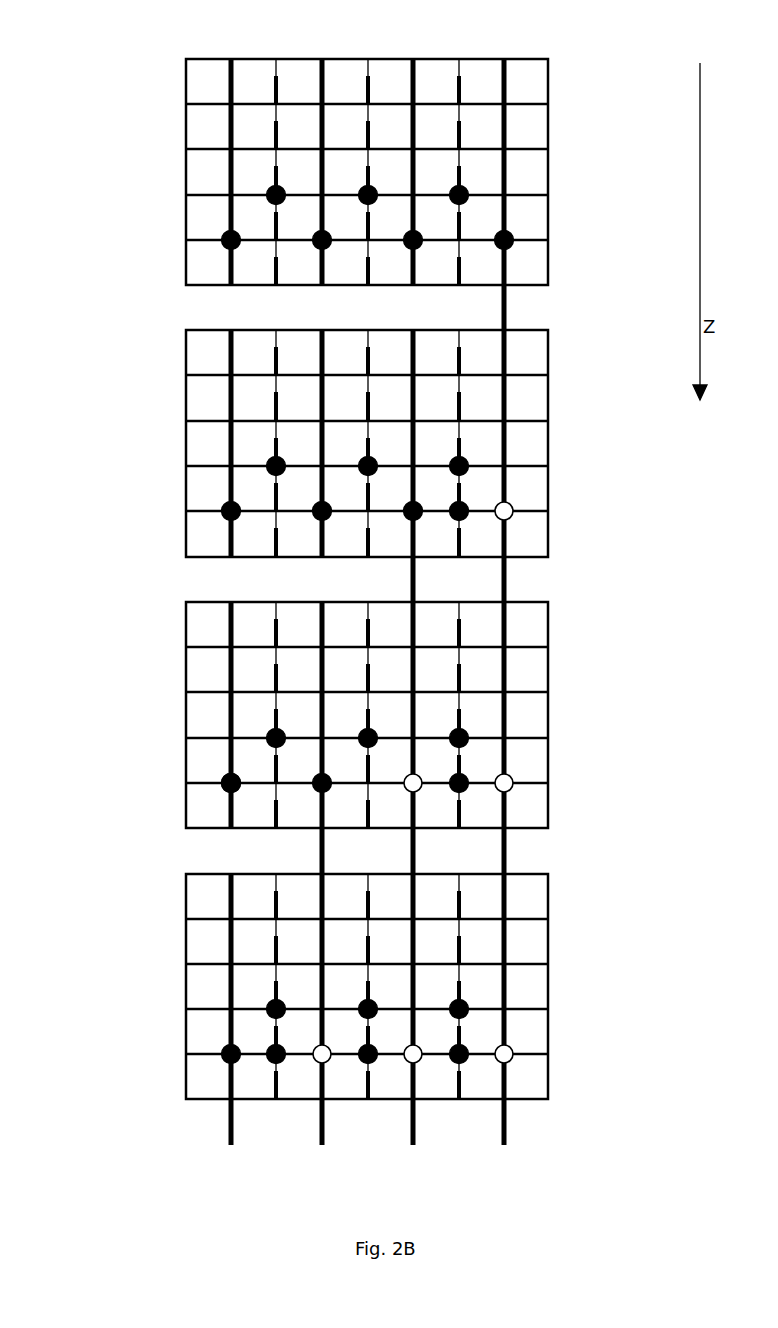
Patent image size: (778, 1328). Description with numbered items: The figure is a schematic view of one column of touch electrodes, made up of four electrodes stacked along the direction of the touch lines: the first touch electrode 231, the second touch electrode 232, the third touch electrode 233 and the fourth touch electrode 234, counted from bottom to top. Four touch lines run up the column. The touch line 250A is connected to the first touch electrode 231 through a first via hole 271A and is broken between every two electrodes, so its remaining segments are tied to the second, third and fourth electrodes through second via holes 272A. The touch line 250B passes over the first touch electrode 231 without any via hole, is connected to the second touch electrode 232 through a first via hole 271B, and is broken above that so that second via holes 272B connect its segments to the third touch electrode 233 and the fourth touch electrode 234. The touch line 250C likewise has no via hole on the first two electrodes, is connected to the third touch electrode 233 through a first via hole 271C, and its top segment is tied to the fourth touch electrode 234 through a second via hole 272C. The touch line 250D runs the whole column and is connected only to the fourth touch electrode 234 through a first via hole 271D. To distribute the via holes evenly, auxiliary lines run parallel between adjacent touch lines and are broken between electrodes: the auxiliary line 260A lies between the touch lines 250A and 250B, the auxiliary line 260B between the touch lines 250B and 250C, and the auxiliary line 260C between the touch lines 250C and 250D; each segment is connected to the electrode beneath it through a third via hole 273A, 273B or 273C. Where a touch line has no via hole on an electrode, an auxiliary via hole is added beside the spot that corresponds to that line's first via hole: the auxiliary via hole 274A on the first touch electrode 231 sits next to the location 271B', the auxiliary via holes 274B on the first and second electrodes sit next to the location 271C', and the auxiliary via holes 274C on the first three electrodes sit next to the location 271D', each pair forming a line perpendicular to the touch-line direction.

The first touch electrode 231 is at (548, 900).
The second touch electrode 232 is at (548, 660).
The third touch electrode 233 is at (548, 403).
The fourth touch electrode 234 is at (548, 63).
The touch line 250A is at (229, 75).
The touch line 250B is at (320, 165).
The touch line 250C is at (415, 353).
The touch line 250D is at (504, 156).
The auxiliary line 260A is at (274, 125).
The auxiliary line 260B is at (369, 58).
The auxiliary line 260C is at (459, 110).
The first via hole 271A is at (222, 1054).
The first via hole 271B is at (180, 815).
The location corresponding to first via hole 271B 271B' is at (225, 1103).
The first via hole 271C is at (367, 547).
The location corresponding to first via hole 271C 271C' is at (357, 992).
The first via hole 271D is at (568, 257).
The location corresponding to first via hole 271D 271D' is at (572, 799).
The second via hole 272A is at (222, 241).
The second via hole 272B is at (320, 243).
The second via hole 272C is at (413, 250).
The third via hole 273A is at (267, 197).
The third via hole 273B is at (366, 200).
The third via hole 273C is at (459, 195).
The auxiliary via hole 274A is at (268, 1060).
The auxiliary via hole 274B is at (320, 793).
The auxiliary via hole 274C is at (461, 514).